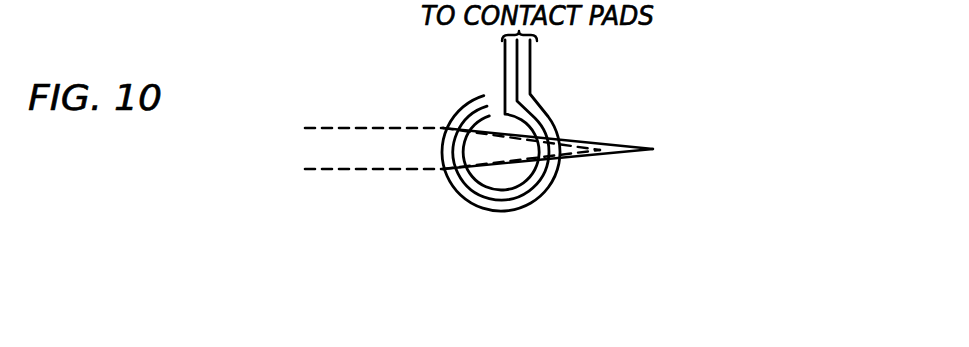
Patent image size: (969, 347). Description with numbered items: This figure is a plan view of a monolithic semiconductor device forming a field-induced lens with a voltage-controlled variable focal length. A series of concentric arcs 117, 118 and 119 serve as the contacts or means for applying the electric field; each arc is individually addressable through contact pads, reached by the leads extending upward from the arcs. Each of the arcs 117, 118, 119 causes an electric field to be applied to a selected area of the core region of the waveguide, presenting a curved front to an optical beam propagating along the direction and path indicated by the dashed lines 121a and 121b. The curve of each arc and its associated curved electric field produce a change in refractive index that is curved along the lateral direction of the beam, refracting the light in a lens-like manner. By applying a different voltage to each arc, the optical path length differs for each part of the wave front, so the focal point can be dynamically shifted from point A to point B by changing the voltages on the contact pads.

The arc 117 is at (505, 58).
The arc 118 is at (517, 53).
The arc 119 is at (530, 78).
The dashed line 121a is at (347, 126).
The dashed line 121b is at (368, 172).
The point A is at (600, 153).
The point B is at (653, 150).